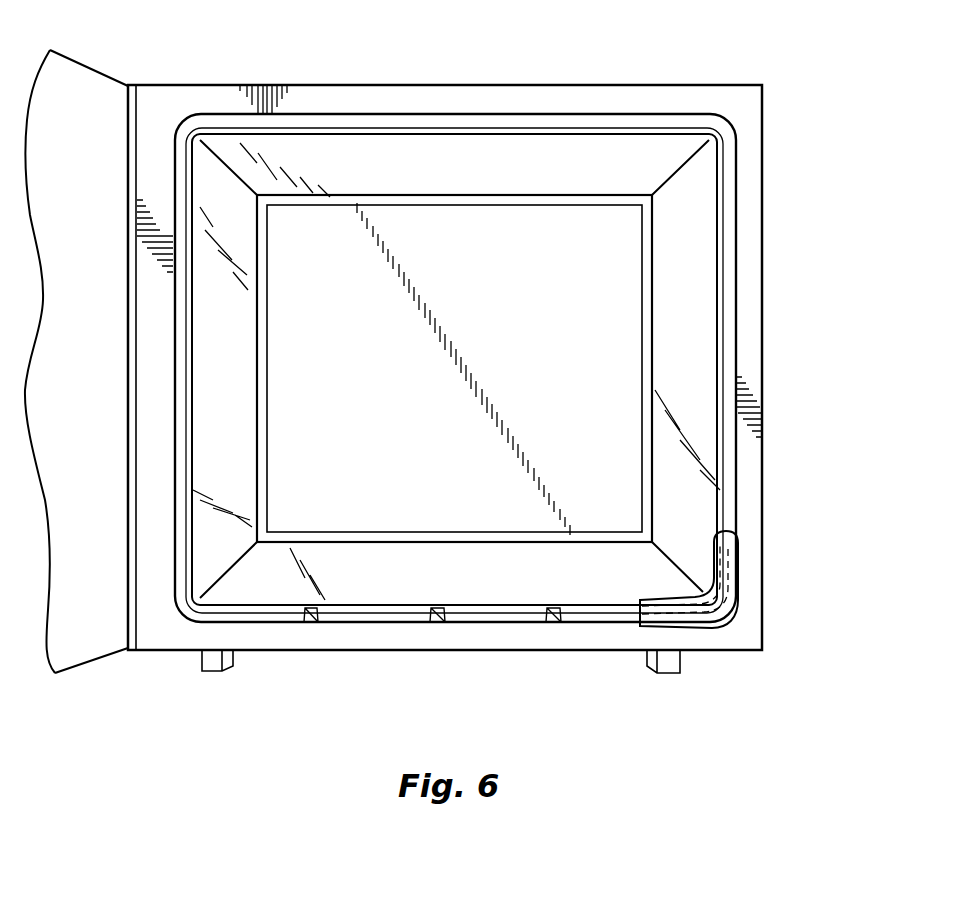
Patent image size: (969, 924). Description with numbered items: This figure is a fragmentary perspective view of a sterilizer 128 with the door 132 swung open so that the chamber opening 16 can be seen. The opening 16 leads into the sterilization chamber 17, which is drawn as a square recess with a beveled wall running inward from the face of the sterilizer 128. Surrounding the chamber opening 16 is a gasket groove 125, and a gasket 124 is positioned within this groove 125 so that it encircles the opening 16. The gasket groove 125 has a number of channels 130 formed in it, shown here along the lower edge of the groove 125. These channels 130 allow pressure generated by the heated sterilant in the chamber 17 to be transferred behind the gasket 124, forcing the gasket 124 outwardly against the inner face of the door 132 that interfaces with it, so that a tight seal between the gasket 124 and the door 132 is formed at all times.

The opening 16 is at (686, 300).
The sterilization chamber 17 is at (382, 398).
The gasket 124 is at (727, 348).
The gasket groove 125 is at (728, 586).
The sterilizer 128 is at (752, 192).
The channels 130 is at (312, 621).
The door 132 is at (93, 93).